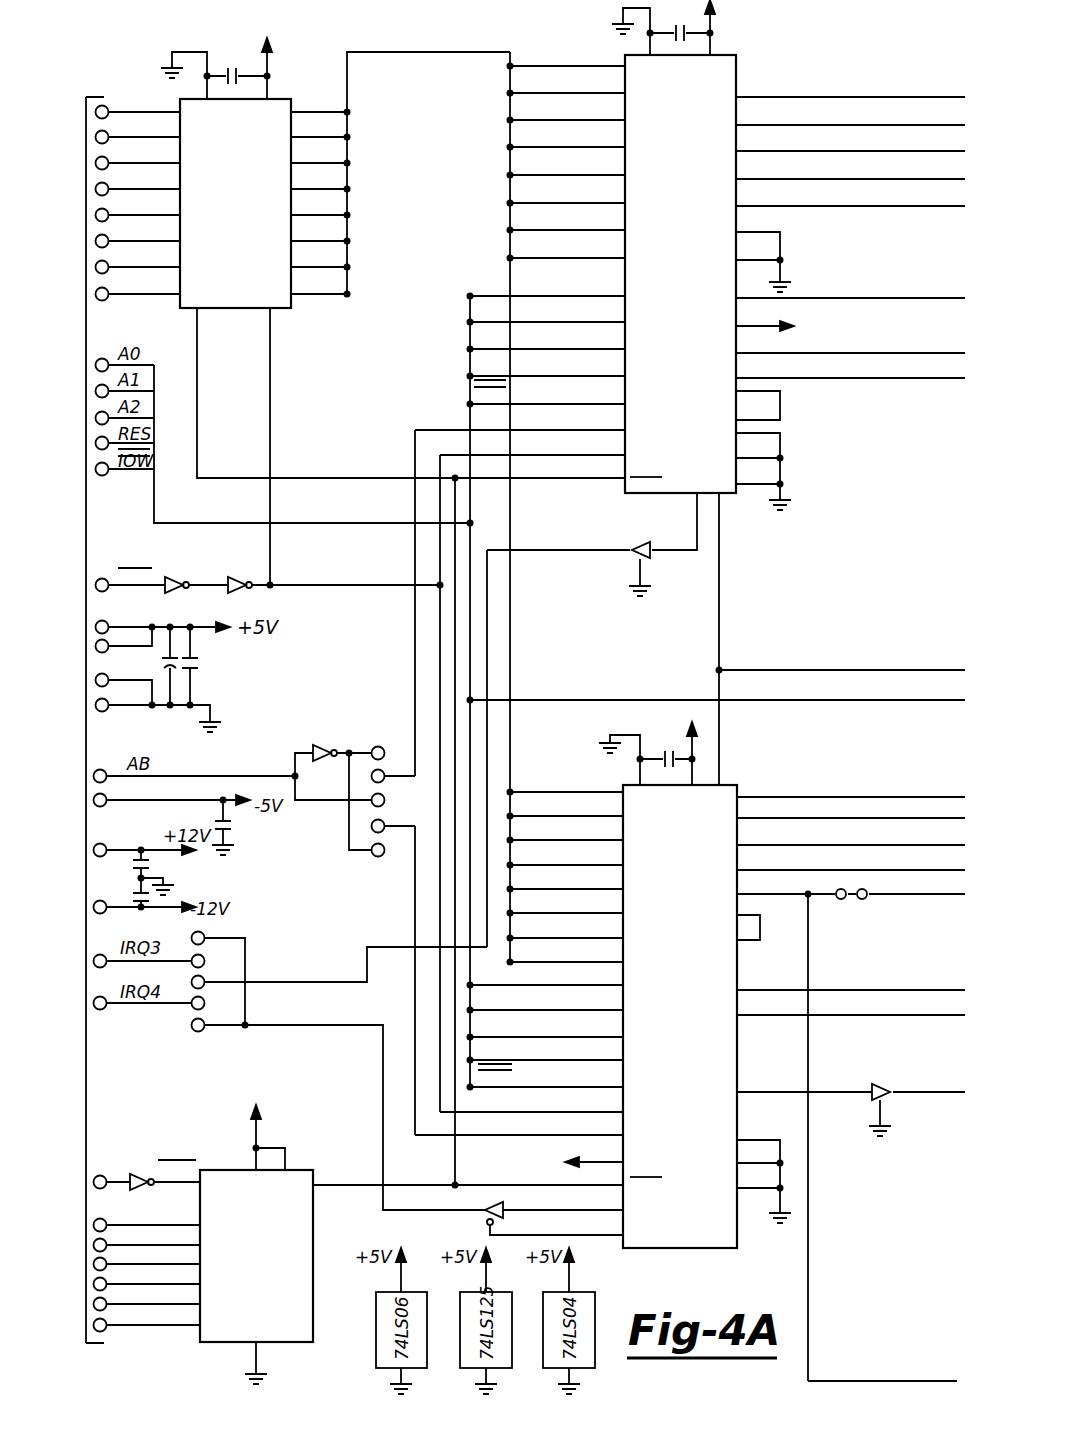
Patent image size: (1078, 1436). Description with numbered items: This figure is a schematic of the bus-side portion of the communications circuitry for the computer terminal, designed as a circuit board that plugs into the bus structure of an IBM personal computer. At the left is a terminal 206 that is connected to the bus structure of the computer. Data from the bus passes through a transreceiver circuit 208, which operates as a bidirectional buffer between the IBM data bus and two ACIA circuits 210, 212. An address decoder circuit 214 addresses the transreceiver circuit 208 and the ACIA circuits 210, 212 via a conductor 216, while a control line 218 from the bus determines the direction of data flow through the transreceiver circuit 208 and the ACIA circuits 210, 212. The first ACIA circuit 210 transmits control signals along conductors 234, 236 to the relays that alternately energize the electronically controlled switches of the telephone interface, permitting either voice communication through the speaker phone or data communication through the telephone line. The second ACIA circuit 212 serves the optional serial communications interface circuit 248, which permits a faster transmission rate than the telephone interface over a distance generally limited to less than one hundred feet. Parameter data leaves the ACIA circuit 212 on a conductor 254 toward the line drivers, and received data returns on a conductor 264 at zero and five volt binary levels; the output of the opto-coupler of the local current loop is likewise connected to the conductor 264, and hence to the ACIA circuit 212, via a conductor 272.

The terminal 206 is at (86, 634).
The transreceiver circuit 208 is at (240, 289).
The ACIA circuit 210 is at (692, 379).
The ACIA circuit 212 is at (696, 1124).
The address decoder circuit 214 is at (265, 1332).
The conductor 216 is at (343, 1183).
The control line 218 is at (342, 588).
The conductor 234 is at (876, 378).
The conductor 236 is at (925, 268).
The serial communications interface circuit 248 is at (826, 776).
The conductor 254 is at (827, 1092).
The conductor 264 is at (935, 896).
The conductor 272 is at (920, 1348).